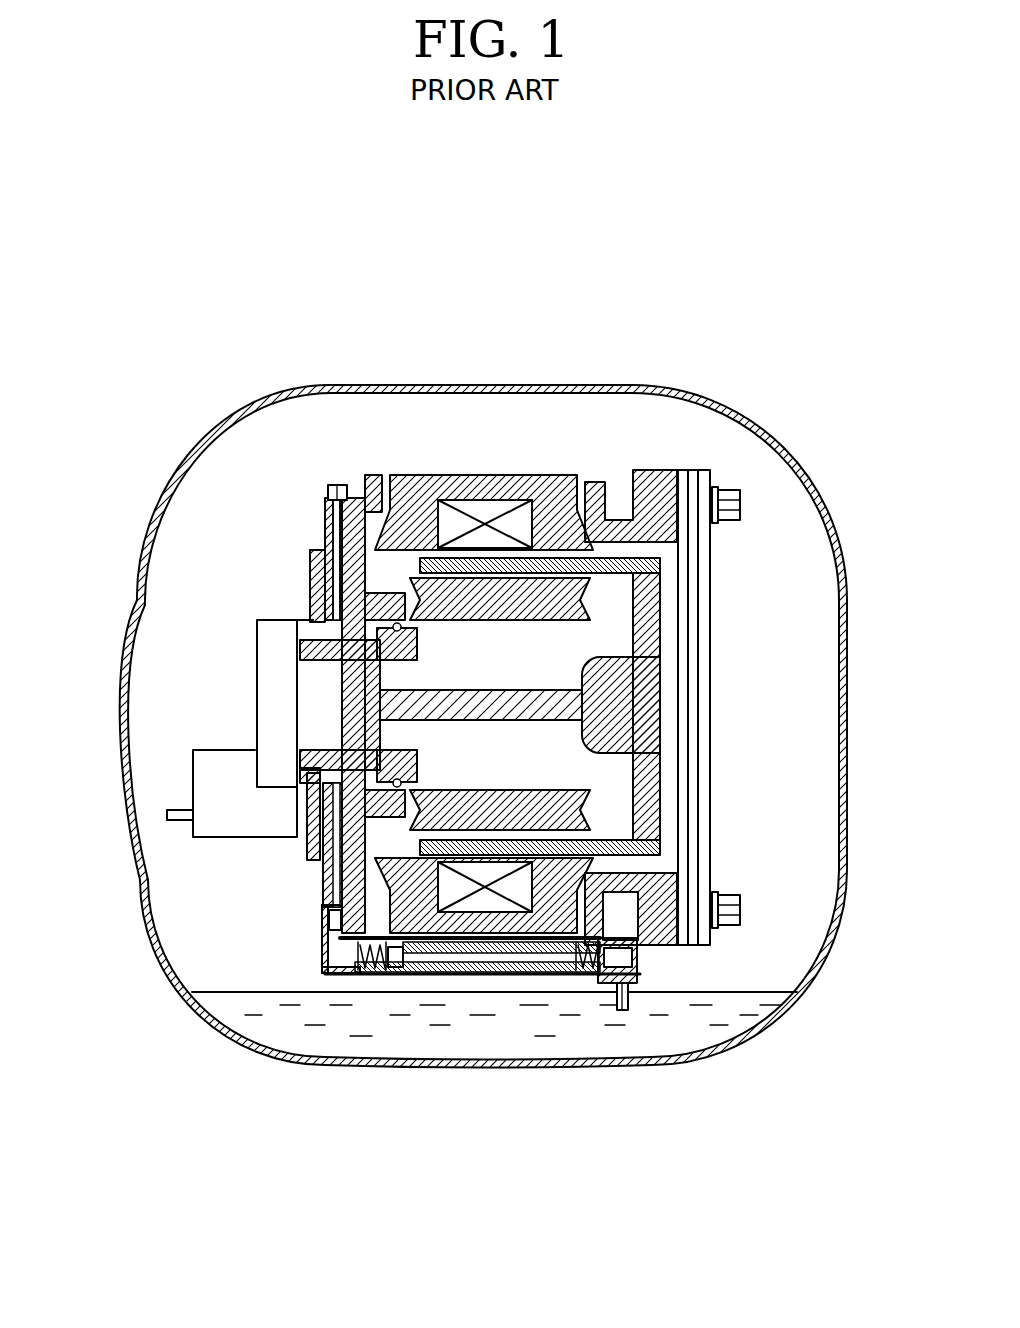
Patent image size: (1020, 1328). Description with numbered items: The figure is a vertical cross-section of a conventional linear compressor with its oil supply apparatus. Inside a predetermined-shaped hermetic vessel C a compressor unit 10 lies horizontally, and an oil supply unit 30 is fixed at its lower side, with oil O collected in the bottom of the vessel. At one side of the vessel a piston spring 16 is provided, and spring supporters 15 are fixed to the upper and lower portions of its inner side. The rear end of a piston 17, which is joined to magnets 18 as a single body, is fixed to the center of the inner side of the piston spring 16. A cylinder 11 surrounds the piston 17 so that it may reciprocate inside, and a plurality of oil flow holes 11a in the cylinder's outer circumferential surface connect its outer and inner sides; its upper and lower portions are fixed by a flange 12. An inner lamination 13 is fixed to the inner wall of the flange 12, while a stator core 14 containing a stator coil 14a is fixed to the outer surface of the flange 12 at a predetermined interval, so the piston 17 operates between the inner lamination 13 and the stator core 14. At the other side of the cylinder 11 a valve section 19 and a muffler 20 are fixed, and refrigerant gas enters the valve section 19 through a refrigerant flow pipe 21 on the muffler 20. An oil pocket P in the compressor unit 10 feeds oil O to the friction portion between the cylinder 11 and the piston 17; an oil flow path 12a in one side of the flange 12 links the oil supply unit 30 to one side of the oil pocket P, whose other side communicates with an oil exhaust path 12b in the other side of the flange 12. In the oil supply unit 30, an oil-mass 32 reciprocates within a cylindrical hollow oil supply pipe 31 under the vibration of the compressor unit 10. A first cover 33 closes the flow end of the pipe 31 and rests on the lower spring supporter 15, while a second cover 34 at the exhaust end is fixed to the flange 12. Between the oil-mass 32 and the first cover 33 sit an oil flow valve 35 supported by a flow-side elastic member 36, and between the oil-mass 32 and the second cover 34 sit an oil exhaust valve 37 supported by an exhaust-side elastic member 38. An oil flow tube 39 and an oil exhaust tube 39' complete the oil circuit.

The hermetic vessel C is at (238, 373).
The oil O is at (748, 1017).
The compressor unit 10 is at (286, 590).
The oil pocket P is at (317, 637).
The cylinder 11 is at (300, 646).
The oil flow holes 11a is at (420, 650).
The flange 12 is at (322, 866).
The oil flow path 12a is at (322, 957).
The oil exhaust path 12b is at (327, 527).
The inner lamination 13 is at (460, 800).
The stator core 14 is at (410, 478).
The stator coil 14a is at (485, 520).
The spring supporters 15 is at (658, 478).
The piston spring 16 is at (705, 632).
The piston 17 is at (525, 705).
The magnets 18 is at (530, 847).
The valve section 19 is at (265, 722).
The muffler 20 is at (217, 826).
The refrigerant flow pipe 21 is at (178, 812).
The oil supply unit 30 is at (468, 975).
The oil supply pipe 31 is at (432, 975).
The oil-mass 32 is at (510, 975).
The first cover 33 is at (640, 958).
The second cover 34 is at (324, 964).
The oil flow valve 35 is at (600, 978).
The flow-side elastic member 36 is at (585, 975).
The oil exhaust valve 37 is at (393, 975).
The exhaust-side elastic member 38 is at (360, 975).
The oil flow tube 39 is at (660, 1069).
The oil exhaust tube 39' is at (320, 475).